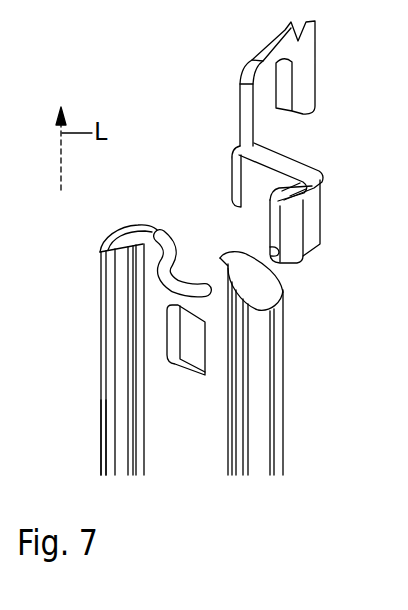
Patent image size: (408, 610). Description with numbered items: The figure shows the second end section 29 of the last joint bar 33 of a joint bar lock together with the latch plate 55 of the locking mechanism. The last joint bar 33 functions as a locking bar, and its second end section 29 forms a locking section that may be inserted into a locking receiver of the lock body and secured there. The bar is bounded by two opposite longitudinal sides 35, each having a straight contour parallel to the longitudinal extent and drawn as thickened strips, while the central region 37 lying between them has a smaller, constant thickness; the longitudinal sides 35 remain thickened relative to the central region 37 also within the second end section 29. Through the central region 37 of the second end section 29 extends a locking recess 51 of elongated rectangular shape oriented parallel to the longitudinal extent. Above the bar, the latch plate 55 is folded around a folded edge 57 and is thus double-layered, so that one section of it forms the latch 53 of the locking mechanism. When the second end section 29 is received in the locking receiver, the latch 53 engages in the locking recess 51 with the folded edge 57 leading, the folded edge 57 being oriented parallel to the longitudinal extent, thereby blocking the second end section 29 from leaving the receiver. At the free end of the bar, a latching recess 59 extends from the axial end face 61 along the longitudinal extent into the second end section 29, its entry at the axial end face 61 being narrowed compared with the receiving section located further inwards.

The second end section 29 is at (214, 393).
The last joint bar 33 is at (153, 381).
The longitudinal sides 35 is at (121, 275).
The central region 37 is at (170, 441).
The locking recess 51 is at (172, 343).
The latch 53 is at (308, 218).
The latch plate 55 is at (265, 117).
The folded edge 57 is at (279, 253).
The latching recess 59 is at (180, 232).
The axial end face 61 is at (145, 228).